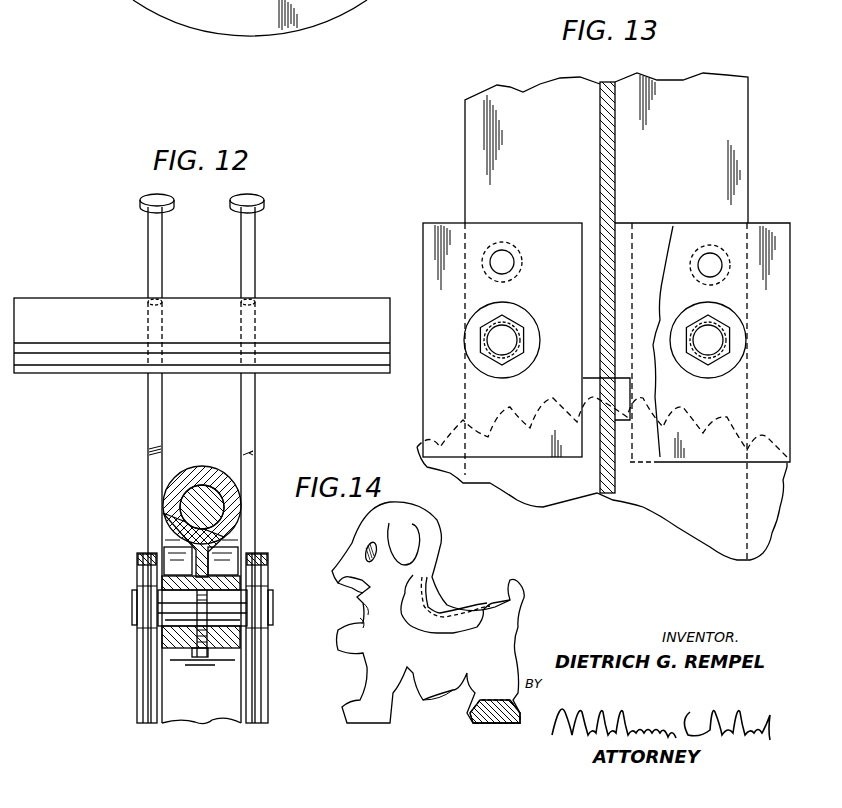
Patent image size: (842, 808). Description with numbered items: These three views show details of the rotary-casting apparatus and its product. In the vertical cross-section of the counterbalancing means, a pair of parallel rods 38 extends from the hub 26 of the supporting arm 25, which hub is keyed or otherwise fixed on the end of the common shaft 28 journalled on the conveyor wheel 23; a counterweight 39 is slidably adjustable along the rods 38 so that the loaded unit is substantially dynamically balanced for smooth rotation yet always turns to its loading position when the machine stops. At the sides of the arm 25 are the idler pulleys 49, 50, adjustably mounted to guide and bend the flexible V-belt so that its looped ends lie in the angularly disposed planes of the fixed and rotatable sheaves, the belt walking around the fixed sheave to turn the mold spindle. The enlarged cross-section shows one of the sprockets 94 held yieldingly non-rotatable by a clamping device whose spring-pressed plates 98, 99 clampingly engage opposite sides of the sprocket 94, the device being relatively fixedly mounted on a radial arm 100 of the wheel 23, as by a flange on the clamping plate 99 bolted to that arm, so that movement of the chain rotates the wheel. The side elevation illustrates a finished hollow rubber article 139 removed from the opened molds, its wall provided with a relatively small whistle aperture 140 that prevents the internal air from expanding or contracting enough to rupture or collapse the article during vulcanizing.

In FIG. 13, the conveyor wheel 23 is at (751, 107).
In FIG. 12, the supporting arm 25 is at (170, 640).
In FIG. 12, the hub 26 is at (182, 478).
In FIG. 12, the shaft 28 is at (196, 501).
In FIG. 12, the parallel rods 38 is at (254, 278).
In FIG. 12, the counterweight 39 is at (331, 299).
In FIG. 12, the idler pulley 49 is at (268, 565).
In FIG. 12, the idler pulley 50 is at (137, 562).
In FIG. 13, the sprocket 94 is at (694, 518).
In FIG. 13, the spring-pressed clamping plate 98 is at (498, 230).
In FIG. 13, the spring-pressed clamping plate 99 is at (656, 237).
In FIG. 13, the radial arm 100 is at (745, 141).
In FIG. 14, the hollow rubber article 139 is at (435, 573).
In FIG. 14, the whistle aperture 140 is at (490, 729).